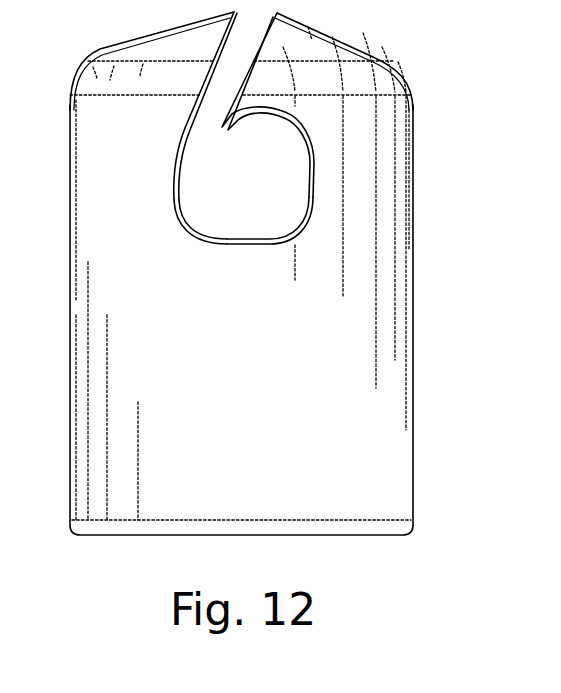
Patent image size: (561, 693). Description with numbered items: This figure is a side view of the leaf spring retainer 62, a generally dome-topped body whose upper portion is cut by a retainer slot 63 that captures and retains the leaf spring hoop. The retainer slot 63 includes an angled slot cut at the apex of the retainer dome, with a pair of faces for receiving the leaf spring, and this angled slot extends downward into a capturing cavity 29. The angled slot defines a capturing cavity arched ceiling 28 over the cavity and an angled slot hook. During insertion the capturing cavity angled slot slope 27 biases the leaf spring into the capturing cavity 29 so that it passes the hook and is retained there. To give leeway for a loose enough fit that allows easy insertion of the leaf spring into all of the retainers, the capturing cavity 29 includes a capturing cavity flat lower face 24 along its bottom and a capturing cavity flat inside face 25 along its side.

The capturing cavity flat lower face 24 is at (267, 242).
The capturing cavity flat inside face 25 is at (310, 205).
The capturing cavity angled slot slope 27 is at (188, 228).
The capturing cavity arched ceiling 28 is at (264, 114).
The capturing cavity 29 is at (215, 180).
The leaf spring retainer 62 is at (262, 456).
The retainer slot 63 is at (313, 165).